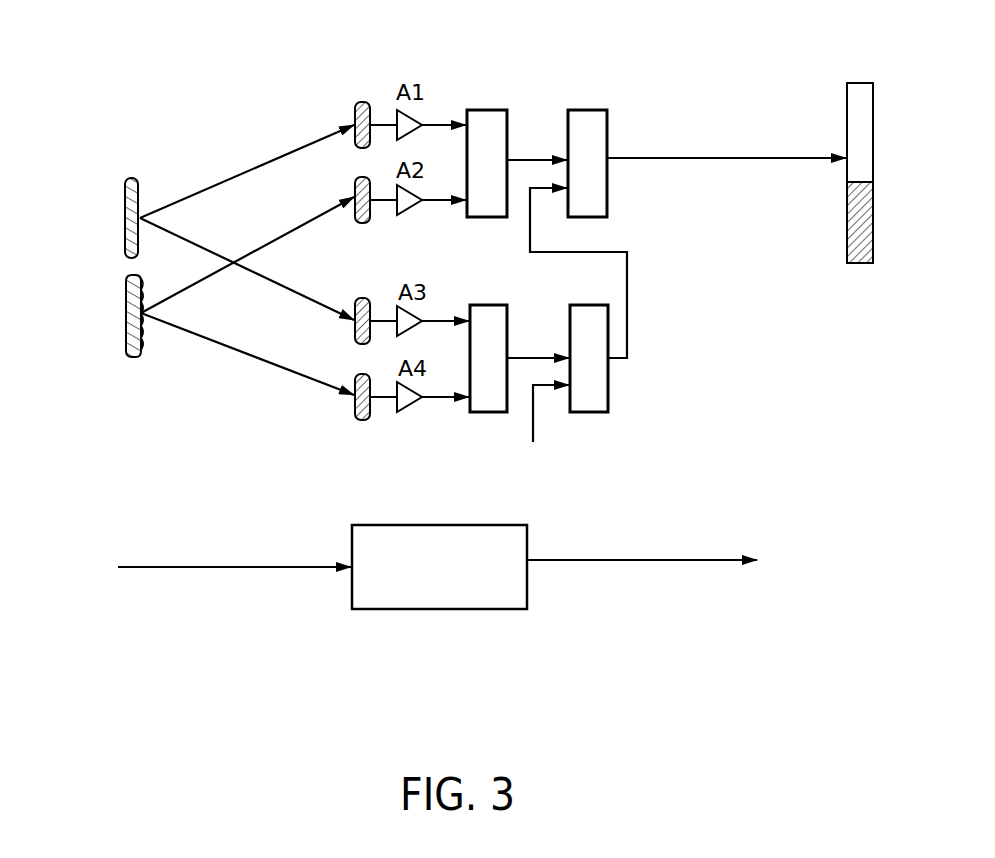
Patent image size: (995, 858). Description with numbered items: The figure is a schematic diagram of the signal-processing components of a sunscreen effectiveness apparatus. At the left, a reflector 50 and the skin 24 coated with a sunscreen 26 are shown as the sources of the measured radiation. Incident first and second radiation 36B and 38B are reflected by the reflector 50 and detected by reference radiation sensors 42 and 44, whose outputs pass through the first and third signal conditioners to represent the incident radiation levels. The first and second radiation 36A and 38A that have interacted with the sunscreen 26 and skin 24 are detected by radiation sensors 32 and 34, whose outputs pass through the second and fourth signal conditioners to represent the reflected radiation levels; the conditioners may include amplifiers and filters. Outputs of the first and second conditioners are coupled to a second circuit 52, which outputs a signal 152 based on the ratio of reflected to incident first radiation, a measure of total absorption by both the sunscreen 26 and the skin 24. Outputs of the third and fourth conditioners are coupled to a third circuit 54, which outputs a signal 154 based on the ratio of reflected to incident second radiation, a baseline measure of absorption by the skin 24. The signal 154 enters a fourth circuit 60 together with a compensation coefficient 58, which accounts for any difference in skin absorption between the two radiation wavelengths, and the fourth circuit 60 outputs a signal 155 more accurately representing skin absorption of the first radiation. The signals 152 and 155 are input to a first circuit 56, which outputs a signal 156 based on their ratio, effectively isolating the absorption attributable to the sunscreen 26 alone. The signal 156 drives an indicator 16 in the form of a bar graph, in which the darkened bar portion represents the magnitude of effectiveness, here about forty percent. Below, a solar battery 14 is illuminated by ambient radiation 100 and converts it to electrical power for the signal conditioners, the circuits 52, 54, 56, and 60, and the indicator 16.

The solar battery 14 is at (432, 524).
The indicator 16 is at (857, 82).
The skin 24 is at (126, 332).
The sunscreen 26 is at (142, 358).
The radiation sensor 32 is at (355, 197).
The radiation sensor 34 is at (356, 381).
The first radiation 36A is at (272, 246).
The incident first radiation 36B is at (268, 157).
The second radiation 38A is at (272, 367).
The incident second radiation 38B is at (271, 290).
The reference radiation sensor 42 is at (355, 112).
The reference radiation sensor 44 is at (356, 305).
The reflector 50 is at (125, 226).
The second circuit 52 is at (485, 108).
The third circuit 54 is at (488, 303).
The first circuit 56 is at (588, 108).
The compensation coefficient 58 is at (533, 418).
The fourth circuit 60 is at (608, 402).
The ambient radiation 100 is at (217, 570).
The signal 152 is at (531, 158).
The signal 154 is at (533, 356).
The signal 155 is at (627, 303).
The output signal 156 is at (652, 158).